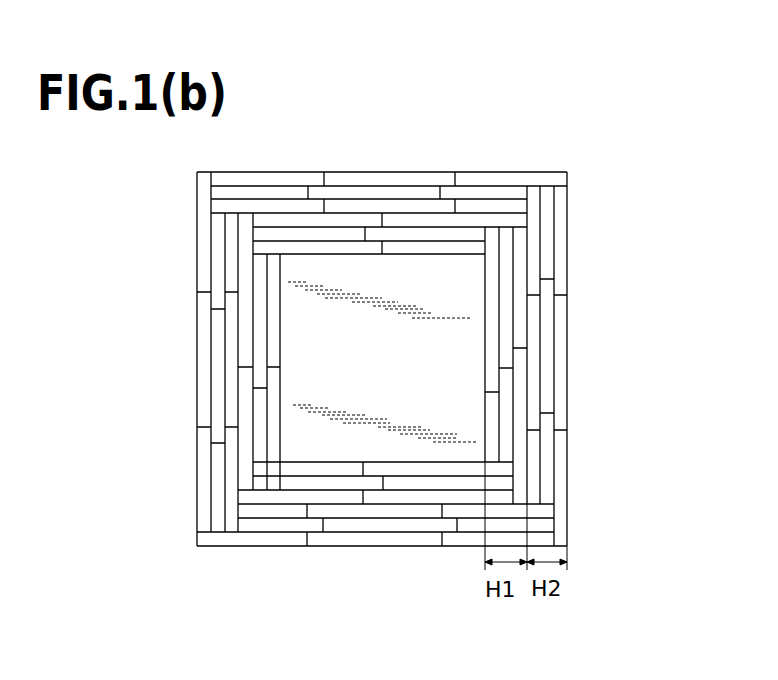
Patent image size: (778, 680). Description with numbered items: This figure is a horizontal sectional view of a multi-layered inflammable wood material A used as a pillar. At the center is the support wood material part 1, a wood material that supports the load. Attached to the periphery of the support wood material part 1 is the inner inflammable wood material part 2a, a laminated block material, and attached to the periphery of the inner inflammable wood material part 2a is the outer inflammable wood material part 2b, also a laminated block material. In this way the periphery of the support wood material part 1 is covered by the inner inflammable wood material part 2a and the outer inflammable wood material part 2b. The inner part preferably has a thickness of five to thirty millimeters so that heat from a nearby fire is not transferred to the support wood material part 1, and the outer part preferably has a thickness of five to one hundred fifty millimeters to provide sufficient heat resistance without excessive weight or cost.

The multi-layered inflammable wood material A is at (587, 163).
The support wood material part 1 is at (382, 362).
The inner inflammable wood material part 2a is at (433, 222).
The outer inflammable wood material part 2b is at (532, 217).